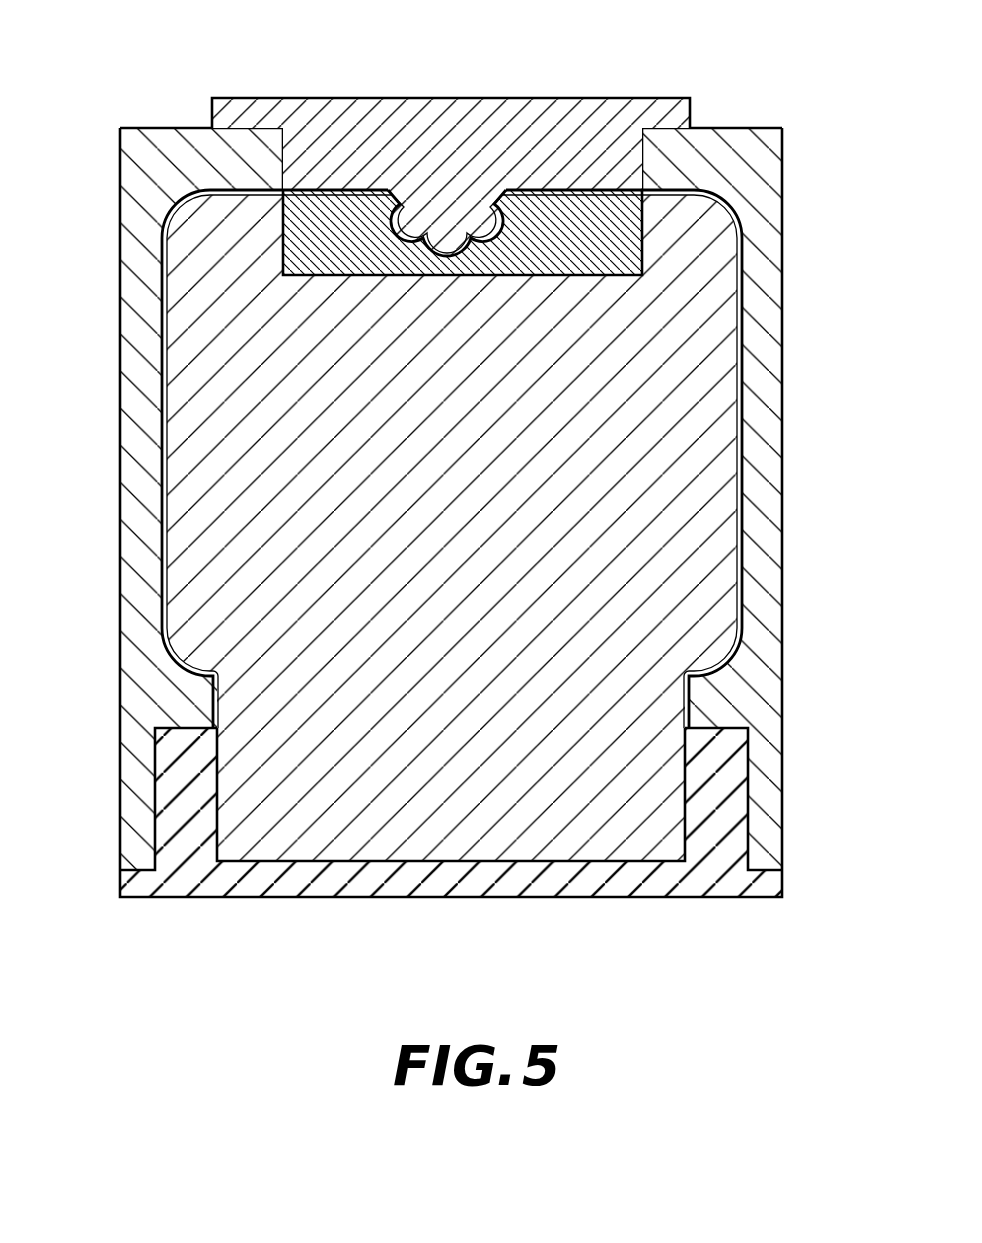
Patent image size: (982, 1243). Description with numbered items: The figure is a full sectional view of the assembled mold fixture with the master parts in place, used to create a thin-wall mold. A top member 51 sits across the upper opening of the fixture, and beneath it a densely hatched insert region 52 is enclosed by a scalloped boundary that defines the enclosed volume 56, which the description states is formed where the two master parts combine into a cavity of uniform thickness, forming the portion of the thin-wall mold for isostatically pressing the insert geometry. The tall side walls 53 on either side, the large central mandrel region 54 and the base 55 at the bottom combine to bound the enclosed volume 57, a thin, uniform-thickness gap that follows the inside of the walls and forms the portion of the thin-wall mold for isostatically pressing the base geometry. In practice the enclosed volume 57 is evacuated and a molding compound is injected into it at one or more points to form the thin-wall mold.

The plug 51 is at (315, 97).
The insert region 52 is at (282, 213).
The side wall 53 is at (120, 280).
The filling 54 is at (506, 765).
The base 55 is at (173, 897).
The enclosed volume 56 is at (449, 250).
The enclosed volume 57 is at (165, 461).